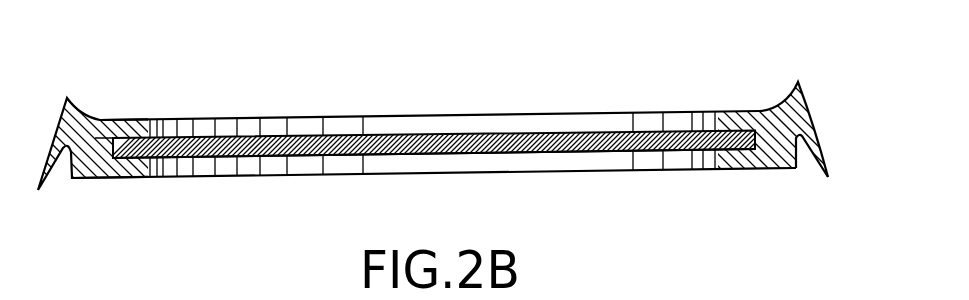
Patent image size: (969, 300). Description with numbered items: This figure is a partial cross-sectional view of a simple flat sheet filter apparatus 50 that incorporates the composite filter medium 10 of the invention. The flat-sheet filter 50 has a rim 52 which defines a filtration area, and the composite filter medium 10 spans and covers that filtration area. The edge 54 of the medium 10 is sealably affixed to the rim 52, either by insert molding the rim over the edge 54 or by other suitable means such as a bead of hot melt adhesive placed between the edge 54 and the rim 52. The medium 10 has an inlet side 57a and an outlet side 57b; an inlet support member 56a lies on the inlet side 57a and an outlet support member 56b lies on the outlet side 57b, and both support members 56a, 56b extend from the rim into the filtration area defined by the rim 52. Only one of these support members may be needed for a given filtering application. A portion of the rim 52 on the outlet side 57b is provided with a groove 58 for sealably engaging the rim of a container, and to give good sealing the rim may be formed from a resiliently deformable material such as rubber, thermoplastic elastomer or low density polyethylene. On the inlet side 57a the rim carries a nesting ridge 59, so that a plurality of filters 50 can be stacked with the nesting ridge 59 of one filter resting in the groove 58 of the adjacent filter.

The flat sheet filter apparatus 50 is at (659, 39).
The composite filter medium 10 is at (247, 120).
The rim 52 is at (818, 119).
The edge 54 is at (106, 158).
The inlet support member 56a is at (522, 115).
The outlet support member 56b is at (515, 173).
The inlet side 57a is at (333, 136).
The outlet side 57b is at (300, 156).
The groove 58 is at (803, 138).
The nesting ridge 59 is at (798, 83).